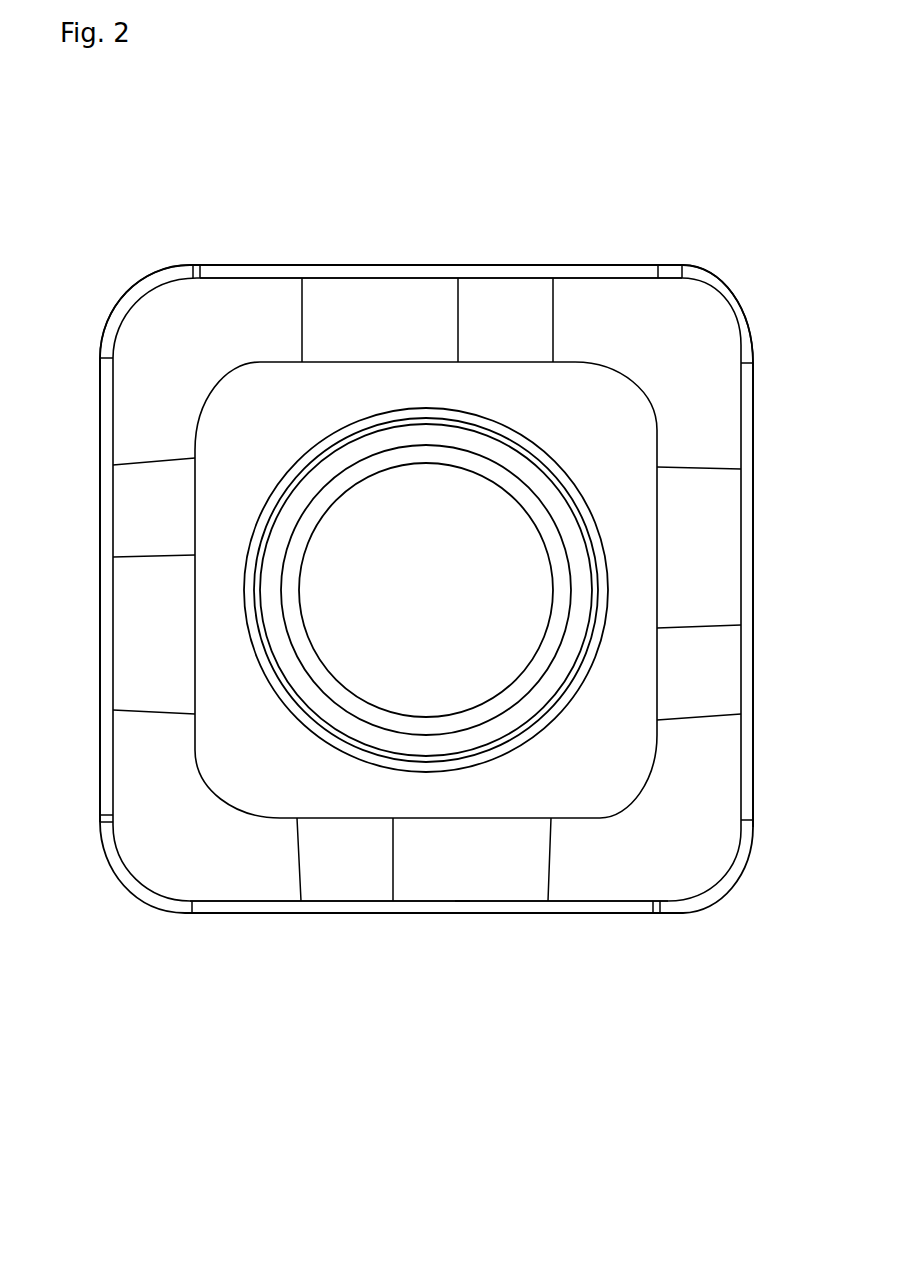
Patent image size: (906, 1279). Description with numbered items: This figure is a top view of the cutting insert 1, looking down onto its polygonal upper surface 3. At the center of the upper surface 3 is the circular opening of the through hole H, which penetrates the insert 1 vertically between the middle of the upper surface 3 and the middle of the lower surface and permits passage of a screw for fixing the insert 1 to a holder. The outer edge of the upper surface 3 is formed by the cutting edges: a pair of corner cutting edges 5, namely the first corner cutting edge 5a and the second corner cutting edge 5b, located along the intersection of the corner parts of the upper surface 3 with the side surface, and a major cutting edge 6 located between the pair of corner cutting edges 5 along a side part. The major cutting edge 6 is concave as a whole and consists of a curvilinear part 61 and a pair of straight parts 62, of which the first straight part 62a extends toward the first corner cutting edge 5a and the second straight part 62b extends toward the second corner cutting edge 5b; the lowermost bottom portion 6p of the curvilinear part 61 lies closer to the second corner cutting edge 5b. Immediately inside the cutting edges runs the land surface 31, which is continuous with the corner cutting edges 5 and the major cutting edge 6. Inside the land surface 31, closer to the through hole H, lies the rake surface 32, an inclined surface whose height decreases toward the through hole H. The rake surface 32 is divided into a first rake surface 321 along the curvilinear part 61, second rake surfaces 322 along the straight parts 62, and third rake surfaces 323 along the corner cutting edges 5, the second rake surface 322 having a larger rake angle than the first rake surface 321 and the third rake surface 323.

The insert 1 is at (60, 258).
The upper surface 3 is at (780, 135).
The land surface 31 is at (512, 272).
The rake surface 32 is at (423, 267).
The first rake surface 321 is at (428, 310).
The second rake surface 322 is at (276, 300).
The third rake surface 323 is at (160, 300).
The through hole H is at (500, 517).
The corner cutting edges 5 is at (421, 718).
The first corner cutting edge 5a is at (132, 903).
The second corner cutting edge 5b is at (712, 903).
The major cutting edge 6 is at (434, 1022).
The curvilinear part 61 is at (421, 910).
The straight part 62 is at (429, 995).
The first straight part 62a is at (290, 912).
The second straight part 62b is at (567, 912).
The bottom portion 6p is at (457, 982).